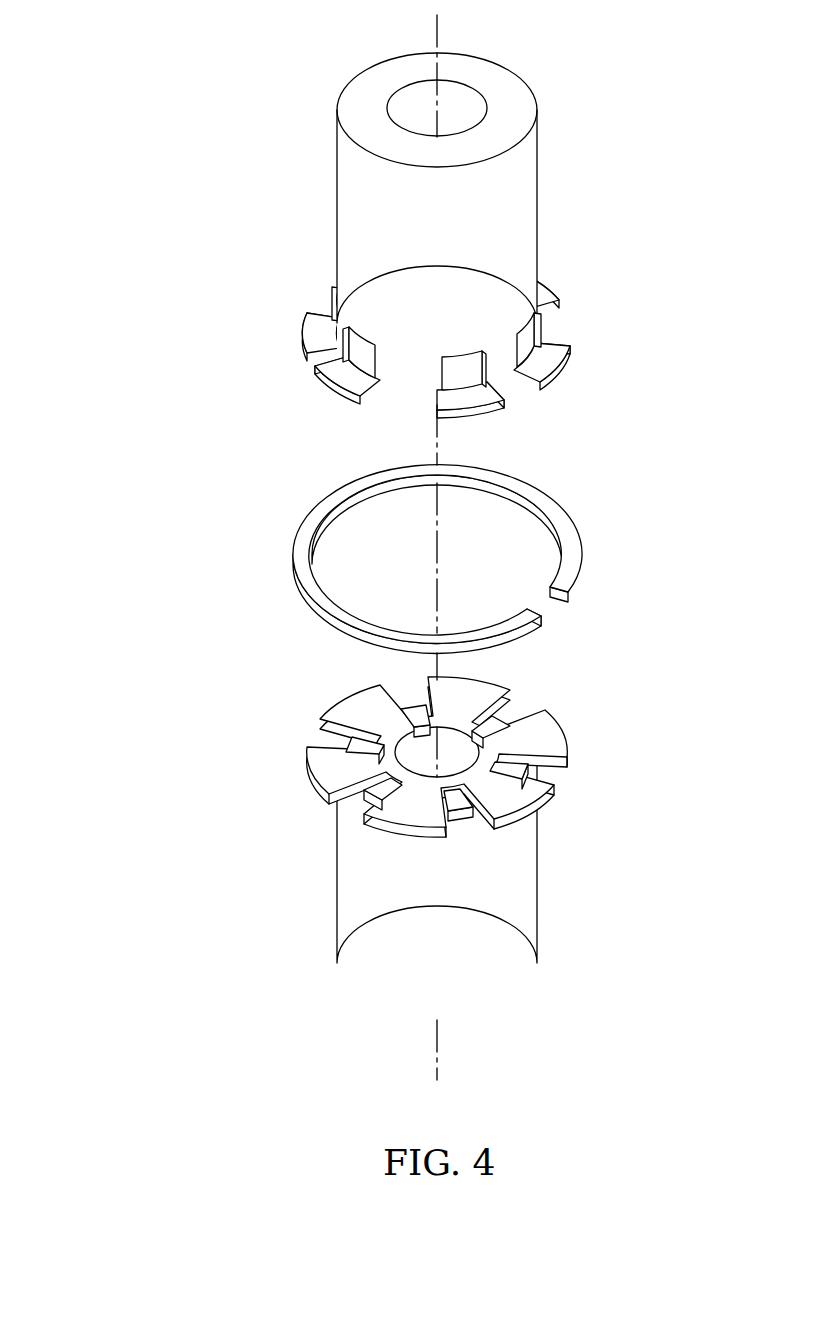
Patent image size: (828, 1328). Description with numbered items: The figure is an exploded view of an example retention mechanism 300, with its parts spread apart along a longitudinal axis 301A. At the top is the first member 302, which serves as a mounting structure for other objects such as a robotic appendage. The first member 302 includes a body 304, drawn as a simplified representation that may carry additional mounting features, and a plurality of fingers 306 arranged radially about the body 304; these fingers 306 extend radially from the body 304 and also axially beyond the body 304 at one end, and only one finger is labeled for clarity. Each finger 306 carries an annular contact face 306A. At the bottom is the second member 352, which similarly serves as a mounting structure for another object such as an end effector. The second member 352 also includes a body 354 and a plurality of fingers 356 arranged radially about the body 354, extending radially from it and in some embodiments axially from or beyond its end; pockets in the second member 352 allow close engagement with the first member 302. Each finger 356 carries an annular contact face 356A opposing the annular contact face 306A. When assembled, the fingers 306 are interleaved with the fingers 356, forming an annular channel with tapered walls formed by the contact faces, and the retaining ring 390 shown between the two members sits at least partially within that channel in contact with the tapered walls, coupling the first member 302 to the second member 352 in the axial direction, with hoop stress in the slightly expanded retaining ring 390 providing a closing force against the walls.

The retention mechanism 300 is at (150, 112).
The longitudinal axis 301A is at (437, 1047).
The first member 302 is at (310, 252).
The body 304 is at (528, 204).
The fingers 306 is at (549, 314).
The annular contact face 306A is at (578, 335).
The retaining ring 390 is at (563, 528).
The second member 352 is at (312, 823).
The body 354 is at (528, 896).
The fingers 356 is at (553, 716).
The annular contact face 356A is at (576, 779).